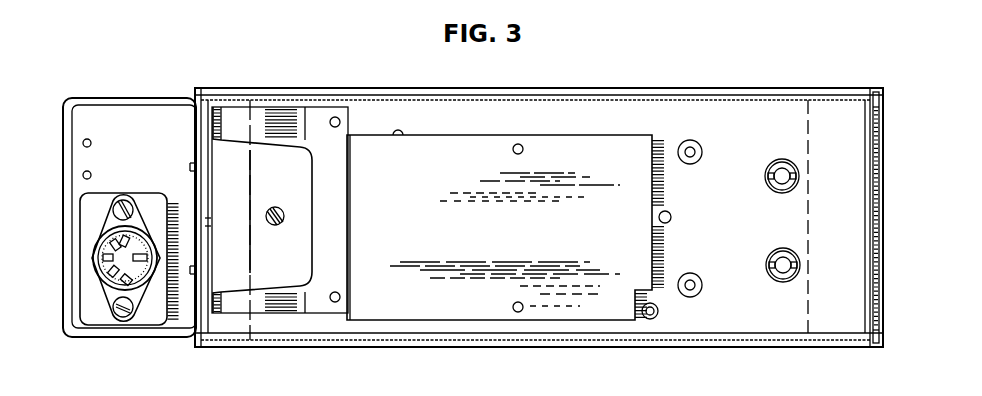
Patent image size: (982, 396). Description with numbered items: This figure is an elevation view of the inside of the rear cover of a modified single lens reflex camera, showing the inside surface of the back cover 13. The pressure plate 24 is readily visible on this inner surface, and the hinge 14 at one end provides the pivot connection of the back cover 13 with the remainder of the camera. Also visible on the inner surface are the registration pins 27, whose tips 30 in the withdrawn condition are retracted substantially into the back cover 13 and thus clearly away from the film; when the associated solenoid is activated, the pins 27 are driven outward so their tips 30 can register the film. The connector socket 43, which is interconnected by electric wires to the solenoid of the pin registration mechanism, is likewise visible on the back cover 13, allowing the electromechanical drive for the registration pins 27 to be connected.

The back cover 13 is at (680, 116).
The hinge 14 is at (877, 176).
The pressure plate 24 is at (552, 150).
The registration pins 27 is at (703, 152).
The tips 30 is at (731, 210).
The connector socket 43 is at (95, 257).